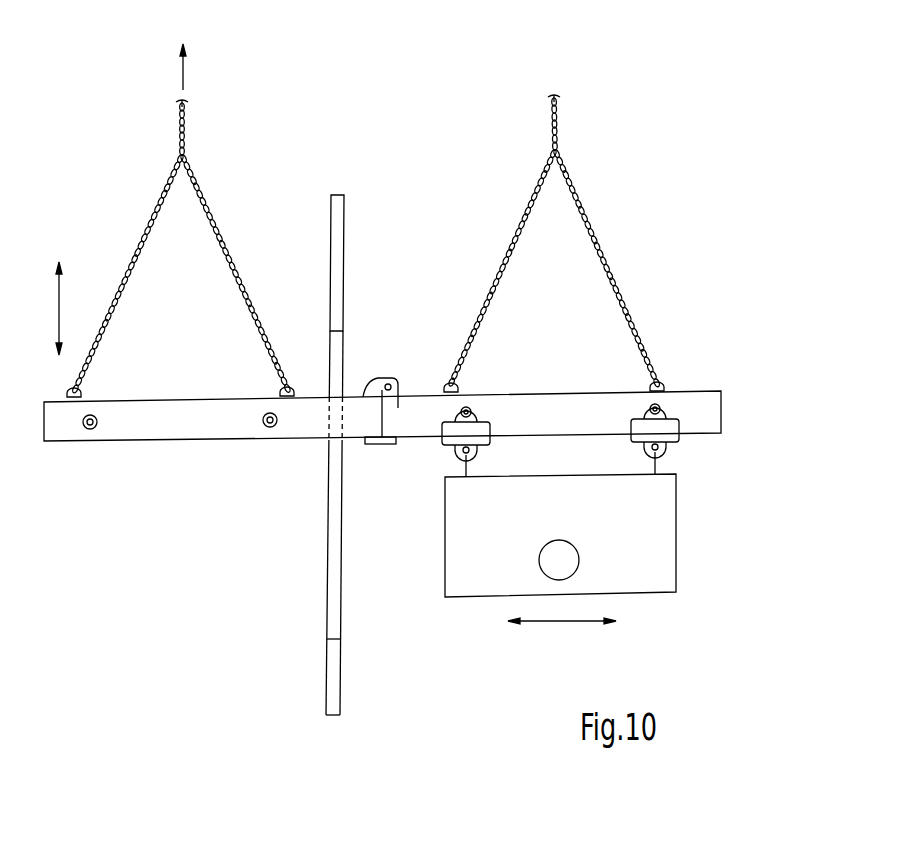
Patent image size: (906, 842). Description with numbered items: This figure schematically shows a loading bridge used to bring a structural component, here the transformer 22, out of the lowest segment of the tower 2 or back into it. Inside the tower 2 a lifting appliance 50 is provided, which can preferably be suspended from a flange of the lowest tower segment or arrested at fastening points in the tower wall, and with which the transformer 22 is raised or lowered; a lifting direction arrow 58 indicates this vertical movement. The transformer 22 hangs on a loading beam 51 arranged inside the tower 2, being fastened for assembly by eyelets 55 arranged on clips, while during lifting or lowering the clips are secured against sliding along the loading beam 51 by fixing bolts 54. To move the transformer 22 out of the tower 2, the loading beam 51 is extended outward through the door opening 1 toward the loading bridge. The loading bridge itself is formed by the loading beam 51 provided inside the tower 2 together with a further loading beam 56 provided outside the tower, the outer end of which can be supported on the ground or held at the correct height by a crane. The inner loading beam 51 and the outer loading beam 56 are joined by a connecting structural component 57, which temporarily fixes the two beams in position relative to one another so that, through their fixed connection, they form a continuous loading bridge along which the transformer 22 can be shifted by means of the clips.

The door opening 1 is at (333, 575).
The tower 2 is at (340, 217).
The transformer 22 is at (650, 537).
The lifting appliance 50 is at (612, 248).
The loading beam 51 is at (705, 418).
The fixing bolts 54 is at (662, 410).
The eyelets 55 is at (667, 448).
The loading beam 56 is at (135, 430).
The connecting structural component 57 is at (388, 383).
The lifting direction arrow 58 is at (200, 67).